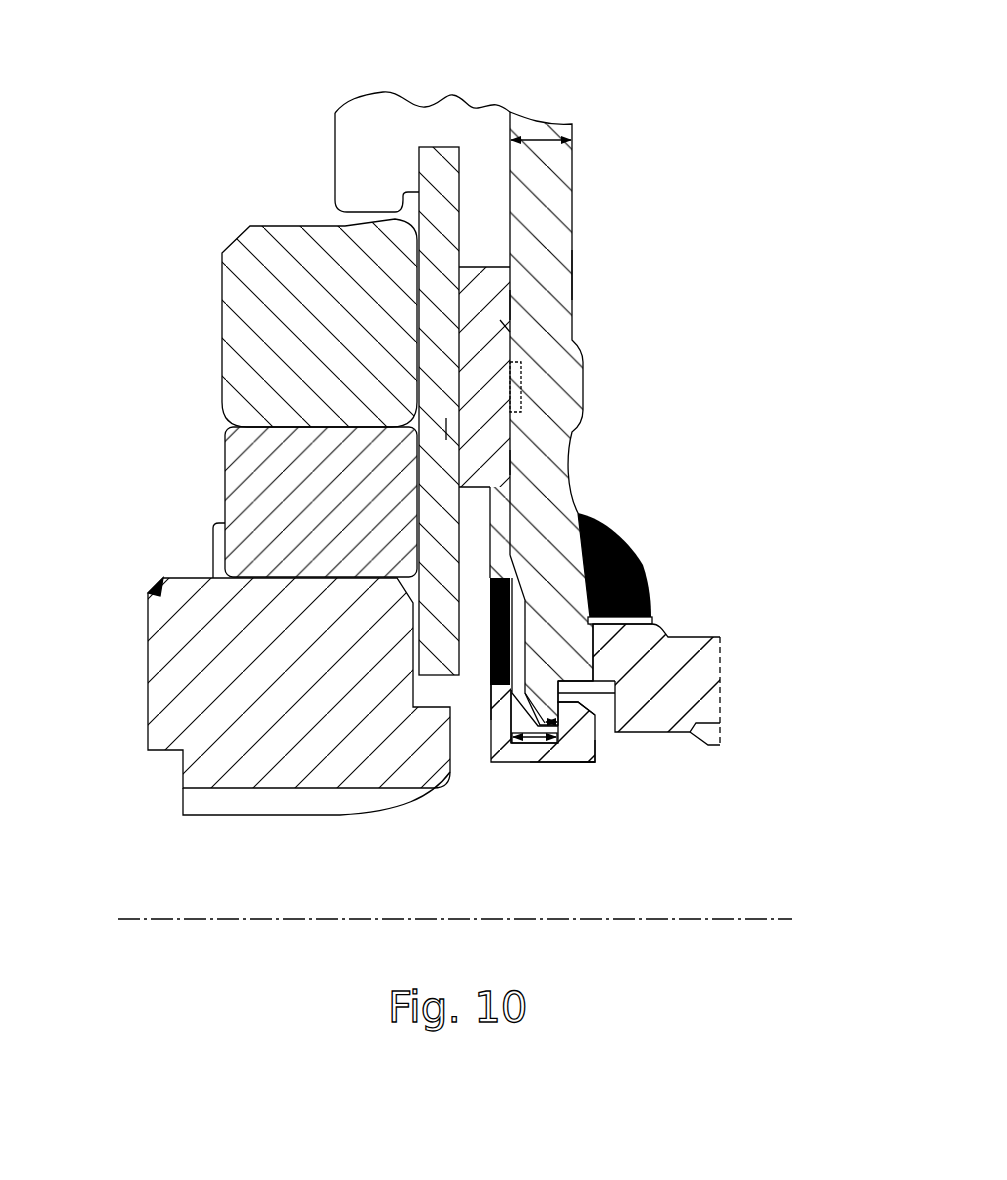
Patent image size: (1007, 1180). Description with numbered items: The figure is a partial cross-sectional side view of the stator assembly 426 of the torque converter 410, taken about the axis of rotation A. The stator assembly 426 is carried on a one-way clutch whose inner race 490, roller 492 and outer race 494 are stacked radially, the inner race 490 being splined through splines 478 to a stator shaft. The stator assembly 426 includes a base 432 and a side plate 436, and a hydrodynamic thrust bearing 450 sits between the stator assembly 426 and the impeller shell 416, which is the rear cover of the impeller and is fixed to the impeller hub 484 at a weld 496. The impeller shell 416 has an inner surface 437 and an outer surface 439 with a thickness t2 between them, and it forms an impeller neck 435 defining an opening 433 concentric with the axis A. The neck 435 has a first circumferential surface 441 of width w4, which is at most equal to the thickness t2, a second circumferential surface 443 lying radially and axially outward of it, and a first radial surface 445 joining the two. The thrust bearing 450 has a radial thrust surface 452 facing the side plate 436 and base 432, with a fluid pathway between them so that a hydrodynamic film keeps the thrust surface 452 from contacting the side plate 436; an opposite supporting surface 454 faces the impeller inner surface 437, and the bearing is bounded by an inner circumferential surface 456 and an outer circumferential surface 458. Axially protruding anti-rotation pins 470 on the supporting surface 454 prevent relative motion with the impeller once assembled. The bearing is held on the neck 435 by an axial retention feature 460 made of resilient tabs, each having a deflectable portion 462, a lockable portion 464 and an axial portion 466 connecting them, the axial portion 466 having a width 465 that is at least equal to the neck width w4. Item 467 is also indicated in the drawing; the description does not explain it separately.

The torque converter 410 is at (739, 156).
The impeller shell 416 is at (573, 200).
The stator assembly 426 is at (460, 75).
The base 432 is at (335, 148).
The opening 433 is at (524, 709).
The impeller neck 435 is at (496, 720).
The side plate 436 is at (461, 178).
The inner surface 437 is at (503, 319).
The outer surface 439 is at (573, 273).
The first circumferential surface 441 is at (598, 769).
The second circumferential surface 443 is at (565, 692).
The first radial surface 445 is at (693, 732).
The hydrodynamic thrust bearing 450 is at (512, 305).
The thrust surface 452 is at (450, 427).
The supporting surface 454 is at (513, 466).
The inner circumferential surface 456 is at (474, 490).
The outer circumferential surface 458 is at (481, 268).
The axial retention feature 460 is at (566, 772).
The deflectable portion 462 is at (489, 700).
The lockable portion 464 is at (578, 736).
The width 465 is at (526, 766).
The axial portion 466 is at (549, 766).
The base portion 467 is at (570, 766).
The anti-rotation pins 470 is at (528, 387).
The splines 478 is at (183, 803).
The impeller hub 484 is at (685, 637).
The inner race 490 is at (324, 697).
The roller 492 is at (344, 517).
The outer race 494 is at (344, 339).
The weld 496 is at (643, 554).
The thickness t2 is at (542, 138).
The width w4 is at (548, 708).
The axis of rotation A is at (787, 919).